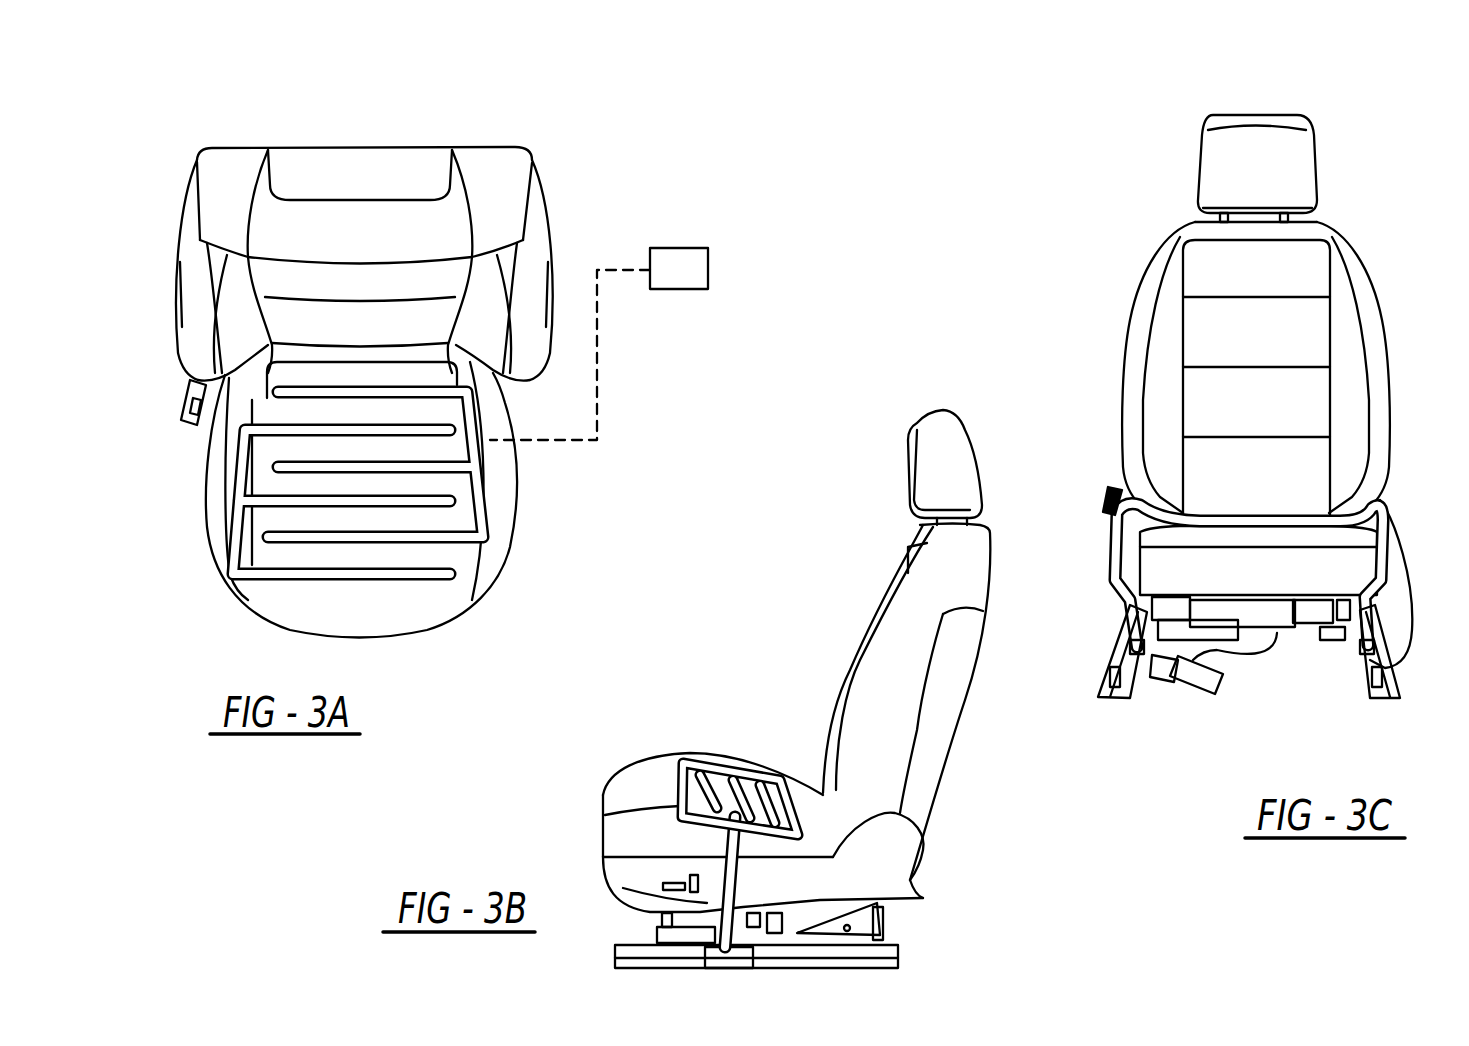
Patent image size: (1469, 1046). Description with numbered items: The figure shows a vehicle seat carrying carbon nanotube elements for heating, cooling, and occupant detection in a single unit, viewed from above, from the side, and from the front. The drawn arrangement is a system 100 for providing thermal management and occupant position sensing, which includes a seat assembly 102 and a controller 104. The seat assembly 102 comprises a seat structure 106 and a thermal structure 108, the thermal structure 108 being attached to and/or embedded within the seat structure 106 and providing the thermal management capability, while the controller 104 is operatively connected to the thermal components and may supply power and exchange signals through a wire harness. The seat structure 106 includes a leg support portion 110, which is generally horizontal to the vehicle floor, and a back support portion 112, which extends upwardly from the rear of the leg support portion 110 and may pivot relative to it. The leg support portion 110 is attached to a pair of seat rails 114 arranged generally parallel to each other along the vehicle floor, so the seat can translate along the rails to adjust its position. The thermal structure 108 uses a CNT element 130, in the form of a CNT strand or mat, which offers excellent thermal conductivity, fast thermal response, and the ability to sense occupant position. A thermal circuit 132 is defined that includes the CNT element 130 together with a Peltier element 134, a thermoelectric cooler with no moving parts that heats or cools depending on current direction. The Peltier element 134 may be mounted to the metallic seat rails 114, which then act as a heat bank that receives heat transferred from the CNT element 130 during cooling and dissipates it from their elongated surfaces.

In FIG. 3A, the system 100 is at (598, 143).
In FIG. 3A, the seat assembly 102 is at (328, 128).
In FIG. 3A, the controller 104 is at (683, 289).
In FIG. 3A, the seat structure 106 is at (190, 332).
In FIG. 3A, the thermal structure 108 is at (300, 595).
In FIG. 3A, the leg support portion 110 is at (470, 618).
In FIG. 3B, the leg support portion 110 is at (606, 786).
In FIG. 3C, the leg support portion 110 is at (1090, 551).
In FIG. 3A, the back support portion 112 is at (550, 217).
In FIG. 3B, the back support portion 112 is at (957, 687).
In FIG. 3C, the back support portion 112 is at (1373, 300).
In FIG. 3B, the seat rails 114 is at (860, 967).
In FIG. 3C, the seat rails 114 is at (1130, 692).
In FIG. 3A, the CNT element 130 is at (400, 590).
In FIG. 3B, the CNT element 130 is at (720, 762).
In FIG. 3C, the CNT element 130 is at (1397, 530).
In FIG. 3C, the thermal circuit 132 is at (1090, 487).
In FIG. 3B, the Peltier element 134 is at (727, 957).
In FIG. 3C, the Peltier element 134 is at (1128, 647).